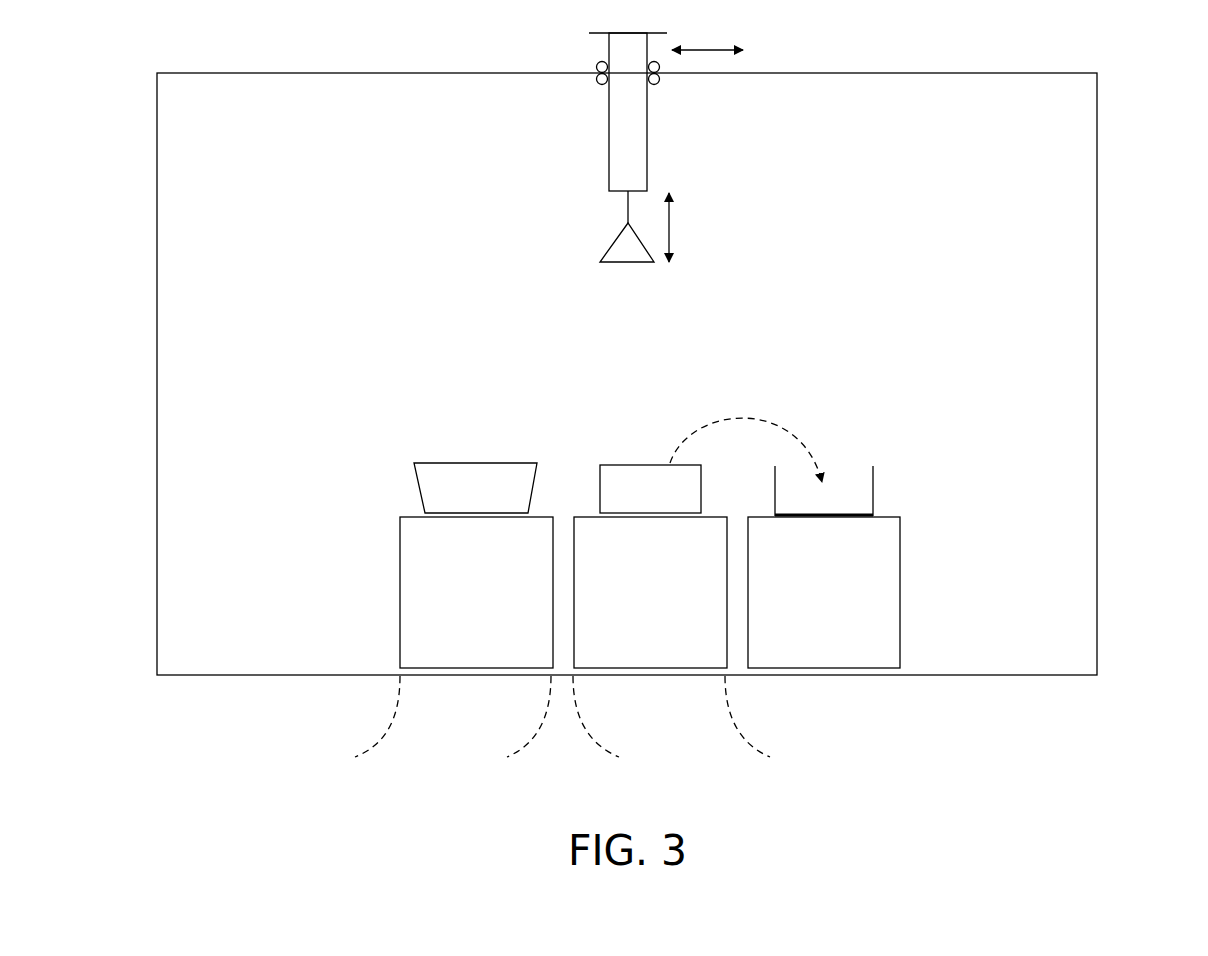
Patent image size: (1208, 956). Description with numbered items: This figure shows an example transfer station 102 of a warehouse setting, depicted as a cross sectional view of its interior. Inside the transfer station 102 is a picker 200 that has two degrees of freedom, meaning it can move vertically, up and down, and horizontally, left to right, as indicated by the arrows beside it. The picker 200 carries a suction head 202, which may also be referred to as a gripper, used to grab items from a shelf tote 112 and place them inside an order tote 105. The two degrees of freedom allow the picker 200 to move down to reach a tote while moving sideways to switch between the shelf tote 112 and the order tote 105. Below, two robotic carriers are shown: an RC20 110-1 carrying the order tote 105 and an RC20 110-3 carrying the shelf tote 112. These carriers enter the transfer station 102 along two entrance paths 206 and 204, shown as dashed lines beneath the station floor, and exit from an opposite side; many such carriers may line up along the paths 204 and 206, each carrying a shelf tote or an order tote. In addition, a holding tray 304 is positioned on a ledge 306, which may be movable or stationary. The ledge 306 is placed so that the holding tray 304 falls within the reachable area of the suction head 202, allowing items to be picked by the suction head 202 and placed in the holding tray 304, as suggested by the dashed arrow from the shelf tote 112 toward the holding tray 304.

The transfer station 102 is at (1098, 142).
The picker 200 is at (609, 108).
The suction head 202 is at (603, 260).
The order tote 105 is at (478, 463).
The shelf tote 112 is at (648, 465).
The holding tray 304 is at (873, 487).
The ledge 306 is at (900, 563).
The RC20 110-1 is at (407, 555).
The RC20 110-3 is at (650, 668).
The entrance path 206 is at (405, 737).
The entrance path 204 is at (710, 737).